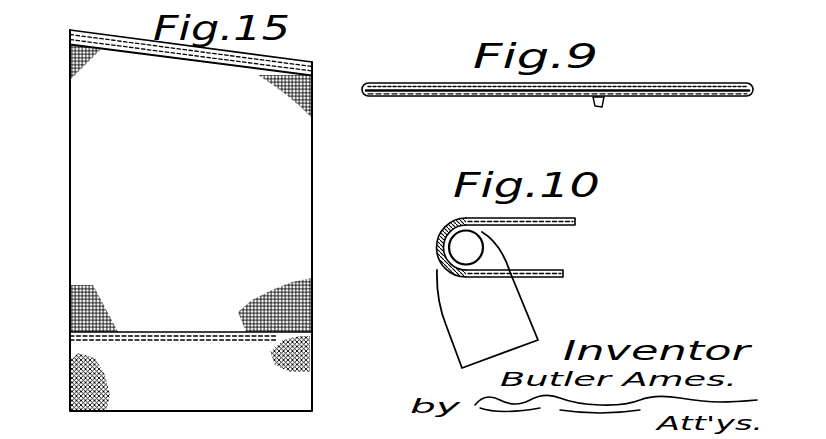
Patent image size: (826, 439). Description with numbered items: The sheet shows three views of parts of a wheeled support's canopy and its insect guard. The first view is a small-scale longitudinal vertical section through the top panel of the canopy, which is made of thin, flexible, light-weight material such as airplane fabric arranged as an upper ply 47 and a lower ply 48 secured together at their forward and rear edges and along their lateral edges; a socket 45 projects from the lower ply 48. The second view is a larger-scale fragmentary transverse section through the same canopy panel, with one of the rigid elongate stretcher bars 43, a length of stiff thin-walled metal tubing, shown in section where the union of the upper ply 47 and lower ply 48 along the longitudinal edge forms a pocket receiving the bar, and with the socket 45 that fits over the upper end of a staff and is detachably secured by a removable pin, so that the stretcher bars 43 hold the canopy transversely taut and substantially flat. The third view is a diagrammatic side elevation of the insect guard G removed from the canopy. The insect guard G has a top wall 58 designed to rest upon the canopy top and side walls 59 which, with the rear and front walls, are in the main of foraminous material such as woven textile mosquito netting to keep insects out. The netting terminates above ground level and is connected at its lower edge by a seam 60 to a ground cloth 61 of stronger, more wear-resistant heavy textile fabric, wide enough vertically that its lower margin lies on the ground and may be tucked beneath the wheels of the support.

In FIG. 15, the insect guard G is at (56, 146).
In FIG. 15, the top wall 58 is at (292, 63).
In FIG. 15, the side walls 59 is at (303, 197).
In FIG. 15, the seam 60 is at (187, 332).
In FIG. 15, the ground cloth 61 is at (76, 357).
In FIG. 9, the upper ply 47 is at (641, 83).
In FIG. 10, the upper ply 47 is at (552, 222).
In FIG. 9, the lower ply 48 is at (505, 97).
In FIG. 10, the lower ply 48 is at (540, 278).
In FIG. 9, the socket 45 is at (602, 101).
In FIG. 10, the socket 45 is at (448, 313).
In FIG. 10, the stretcher bars 43 is at (438, 247).